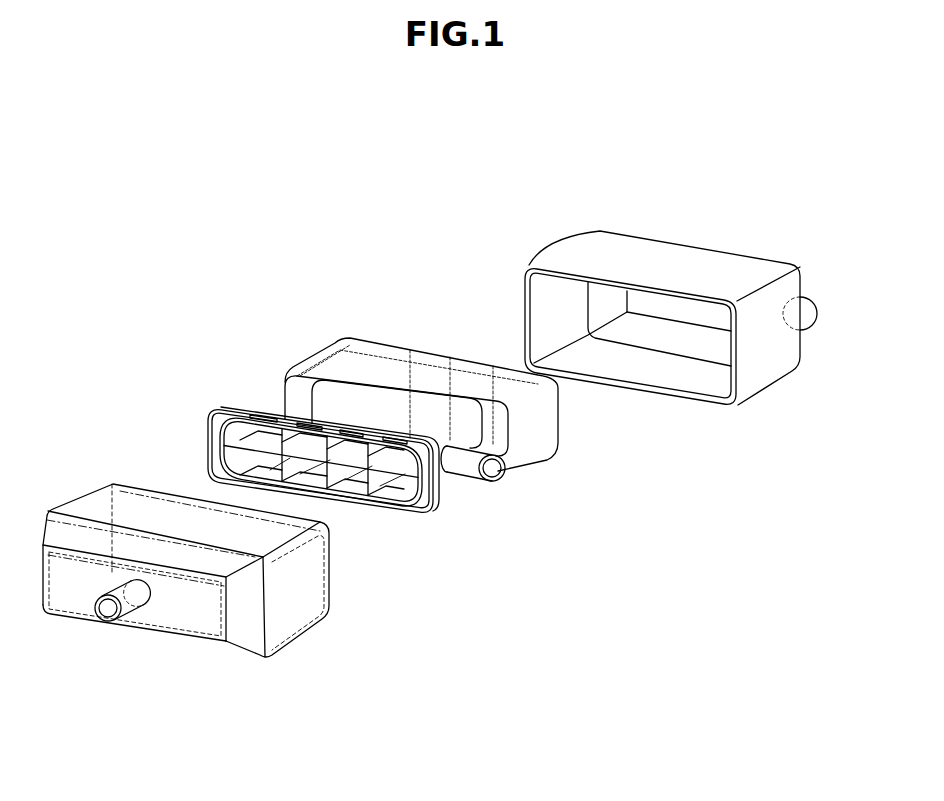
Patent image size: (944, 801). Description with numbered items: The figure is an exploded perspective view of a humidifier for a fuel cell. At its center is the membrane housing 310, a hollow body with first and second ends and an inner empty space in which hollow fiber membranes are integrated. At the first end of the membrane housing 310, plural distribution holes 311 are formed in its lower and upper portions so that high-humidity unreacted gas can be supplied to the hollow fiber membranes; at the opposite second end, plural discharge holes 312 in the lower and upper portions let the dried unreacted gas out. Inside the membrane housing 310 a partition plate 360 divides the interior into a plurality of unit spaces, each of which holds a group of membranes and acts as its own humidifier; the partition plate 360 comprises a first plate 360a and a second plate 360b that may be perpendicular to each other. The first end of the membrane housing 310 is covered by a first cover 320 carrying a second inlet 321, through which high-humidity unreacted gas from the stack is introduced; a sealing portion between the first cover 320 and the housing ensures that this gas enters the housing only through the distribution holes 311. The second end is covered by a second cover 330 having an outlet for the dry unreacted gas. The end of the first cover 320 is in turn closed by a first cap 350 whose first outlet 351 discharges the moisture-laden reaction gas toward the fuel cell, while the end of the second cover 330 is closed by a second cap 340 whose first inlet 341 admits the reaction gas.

The membrane housing 310 is at (434, 463).
The distribution holes 311 is at (395, 496).
The discharge holes 312 is at (378, 360).
The first cover 320 is at (270, 384).
The second inlet 321 is at (497, 472).
The second cover 330 is at (340, 343).
The second cap 340 is at (648, 247).
The first inlet 341 is at (817, 307).
The first cap 350 is at (92, 500).
The first outlet 351 is at (105, 612).
The partition plate 360 is at (152, 402).
The first plate 360a is at (223, 411).
The second plate 360b is at (222, 451).